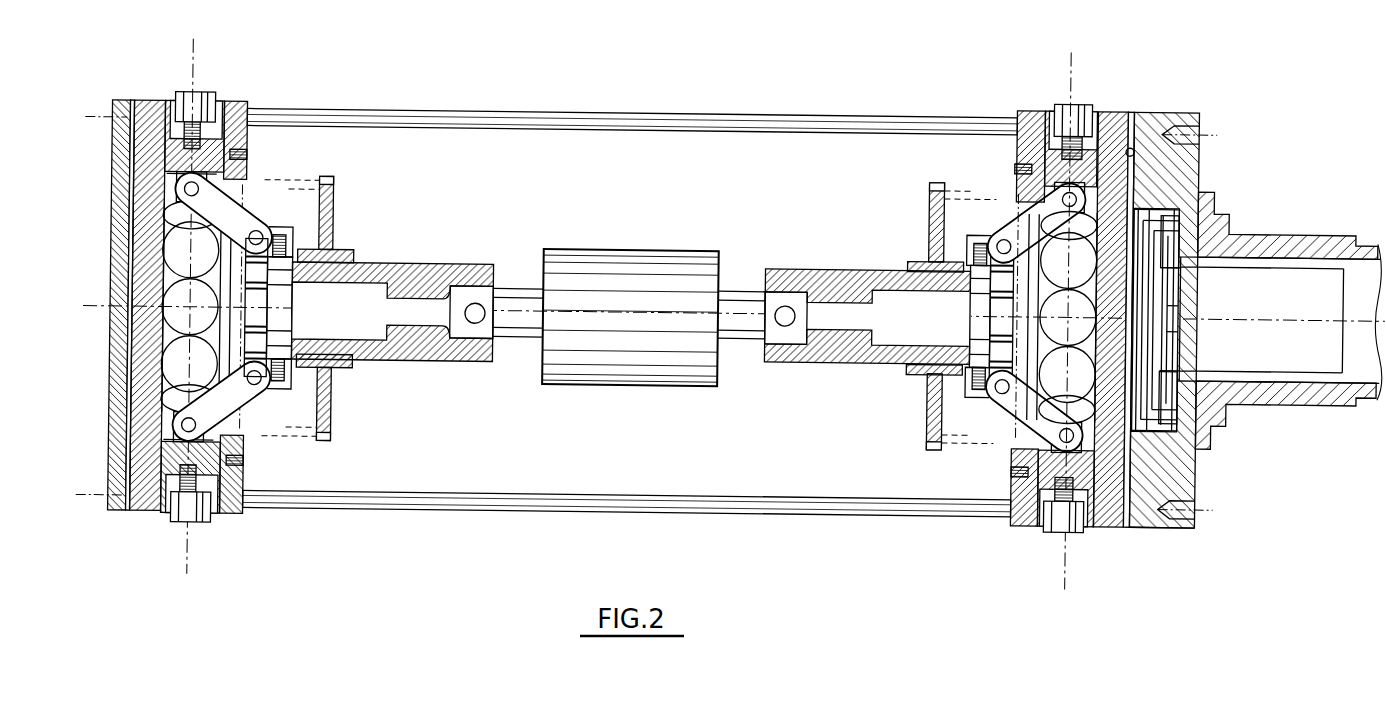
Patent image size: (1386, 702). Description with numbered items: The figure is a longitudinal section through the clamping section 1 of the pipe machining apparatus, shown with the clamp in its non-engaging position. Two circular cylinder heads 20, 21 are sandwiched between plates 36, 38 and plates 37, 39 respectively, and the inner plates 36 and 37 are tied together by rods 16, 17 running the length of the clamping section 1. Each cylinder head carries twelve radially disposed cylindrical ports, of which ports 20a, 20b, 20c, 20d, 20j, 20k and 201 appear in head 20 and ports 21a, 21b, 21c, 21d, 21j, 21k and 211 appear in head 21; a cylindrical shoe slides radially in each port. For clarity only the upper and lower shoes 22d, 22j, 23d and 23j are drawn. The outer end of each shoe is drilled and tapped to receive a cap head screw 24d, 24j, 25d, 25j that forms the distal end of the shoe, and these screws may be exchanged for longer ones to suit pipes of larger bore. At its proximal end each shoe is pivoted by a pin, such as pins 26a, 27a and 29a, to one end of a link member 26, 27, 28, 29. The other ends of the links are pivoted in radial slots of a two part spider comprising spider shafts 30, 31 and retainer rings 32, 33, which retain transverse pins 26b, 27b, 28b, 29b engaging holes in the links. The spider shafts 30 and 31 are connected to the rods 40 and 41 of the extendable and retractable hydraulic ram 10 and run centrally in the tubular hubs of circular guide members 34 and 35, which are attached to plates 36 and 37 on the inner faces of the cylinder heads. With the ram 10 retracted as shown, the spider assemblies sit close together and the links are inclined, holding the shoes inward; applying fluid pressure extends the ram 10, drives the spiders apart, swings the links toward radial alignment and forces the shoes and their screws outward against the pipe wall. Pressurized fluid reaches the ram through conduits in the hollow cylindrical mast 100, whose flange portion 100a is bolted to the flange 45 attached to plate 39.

The clamping section 1 is at (518, 520).
The hydraulic ram 10 is at (640, 386).
The rod 16 is at (632, 114).
The rod 17 is at (596, 514).
The circular cylinder head 20 is at (172, 340).
The cylindrical port 201 is at (170, 370).
The cylindrical port 20a is at (182, 310).
The cylindrical port 20b is at (172, 255).
The cylindrical port 20c is at (175, 225).
The cylindrical port 20d is at (162, 185).
The cylindrical port 20j is at (162, 460).
The cylindrical port 20k is at (172, 403).
The circular cylinder head 21 is at (1172, 458).
The cylindrical port 211 is at (1178, 416).
The cylindrical port 21a is at (1185, 341).
The cylindrical port 21b is at (1185, 291).
The cylindrical port 21c is at (1180, 195).
The cylindrical port 21d is at (1180, 158).
The cylindrical port 21j is at (1178, 517).
The cylindrical port 21k is at (1162, 496).
The cylindrical shoe 22d is at (173, 150).
The cylindrical shoe 22j is at (229, 505).
The cylindrical shoe 23d is at (1030, 148).
The cylindrical shoe 23j is at (1030, 520).
The cap head screw 24d is at (192, 98).
The cap head screw 24j is at (176, 528).
The cap head screw 25d is at (1070, 100).
The cap head screw 25j is at (1068, 522).
The link member 26 is at (228, 225).
The pin 26a is at (246, 157).
The transverse pin 26b is at (290, 240).
The link member 27 is at (232, 415).
The pin 27a is at (233, 475).
The transverse pin 27b is at (288, 390).
The link member 28 is at (1035, 222).
The transverse pin 28b is at (978, 240).
The link member 29 is at (1060, 433).
The pin 29a is at (1013, 470).
The transverse pin 29b is at (1002, 400).
The spider shaft 30 is at (430, 271).
The spider shaft 31 is at (812, 268).
The retainer ring 32 is at (266, 278).
The retainer ring 33 is at (975, 360).
The circular guide member 34 is at (332, 228).
The circular guide member 35 is at (930, 212).
The plate 36 is at (233, 112).
The plate 37 is at (1030, 112).
The plate 38 is at (148, 112).
The plate 39 is at (1120, 112).
The rod 40 is at (522, 340).
The rod 41 is at (742, 340).
The flange 45 is at (1180, 170).
The cylindrical mast 100 is at (1366, 412).
The flange portion 100a is at (1215, 218).